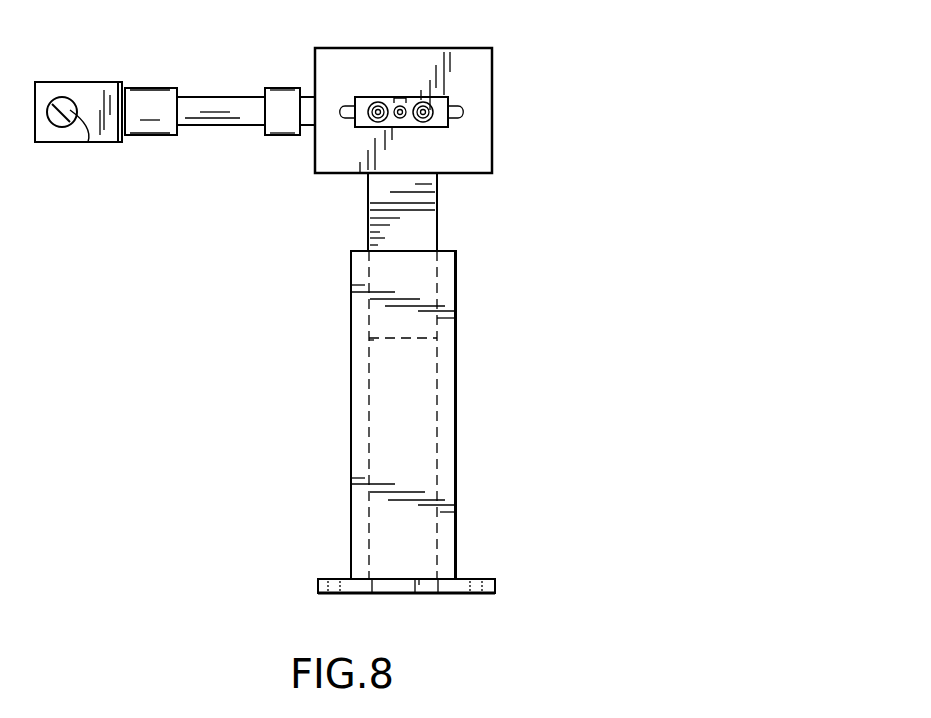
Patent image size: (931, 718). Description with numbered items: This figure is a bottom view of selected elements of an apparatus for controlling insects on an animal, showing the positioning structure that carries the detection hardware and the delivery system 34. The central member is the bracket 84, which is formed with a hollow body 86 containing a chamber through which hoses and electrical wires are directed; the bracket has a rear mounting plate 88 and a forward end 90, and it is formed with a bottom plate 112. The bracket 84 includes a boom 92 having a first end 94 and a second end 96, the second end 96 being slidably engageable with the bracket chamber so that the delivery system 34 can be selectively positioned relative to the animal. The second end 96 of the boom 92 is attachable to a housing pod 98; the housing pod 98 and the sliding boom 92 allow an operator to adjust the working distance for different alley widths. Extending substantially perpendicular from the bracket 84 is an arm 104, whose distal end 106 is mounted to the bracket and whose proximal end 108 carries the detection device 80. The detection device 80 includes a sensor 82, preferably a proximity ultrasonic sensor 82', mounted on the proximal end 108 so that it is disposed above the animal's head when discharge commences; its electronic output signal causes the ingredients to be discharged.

The delivery system 34 is at (186, 263).
The detection device 80 is at (82, 82).
The sensor 82 is at (43, 154).
The proximity ultrasonic sensor 82' is at (97, 150).
The bracket 84 is at (456, 415).
The hollow body 86 is at (403, 570).
The rear mounting plate 88 is at (495, 579).
The forward end 90 is at (447, 247).
The boom 92 is at (368, 232).
The first end 94 is at (368, 175).
The second end 96 is at (368, 340).
The housing pod 98 is at (492, 68).
The arm 104 is at (230, 96).
The distal end 106 is at (310, 95).
The proximal end 108 is at (125, 143).
The bottom plate 112 is at (390, 432).